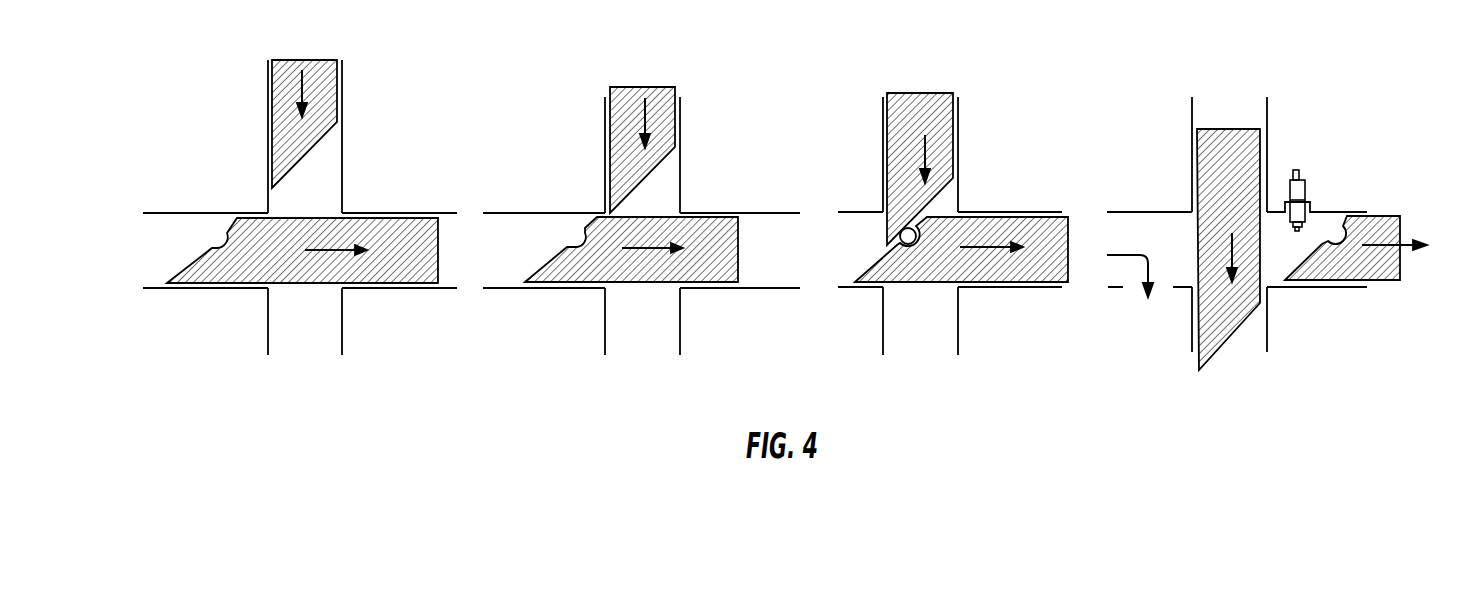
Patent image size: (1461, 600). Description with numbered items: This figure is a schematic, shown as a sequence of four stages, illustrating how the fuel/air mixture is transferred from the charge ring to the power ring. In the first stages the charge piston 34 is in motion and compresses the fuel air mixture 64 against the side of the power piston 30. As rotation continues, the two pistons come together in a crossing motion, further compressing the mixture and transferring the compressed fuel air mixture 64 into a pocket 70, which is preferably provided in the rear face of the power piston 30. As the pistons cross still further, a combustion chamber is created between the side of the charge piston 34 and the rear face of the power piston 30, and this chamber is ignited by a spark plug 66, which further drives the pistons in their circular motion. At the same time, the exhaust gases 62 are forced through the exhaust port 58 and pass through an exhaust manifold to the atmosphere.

The power piston 30 is at (230, 270).
The charge piston 34 is at (327, 112).
The exhaust port 58 is at (1123, 290).
The exhaust gases 62 is at (187, 235).
The fuel air mixture 64 is at (322, 187).
The spark plug 66 is at (1307, 195).
The pocket 70 is at (906, 228).